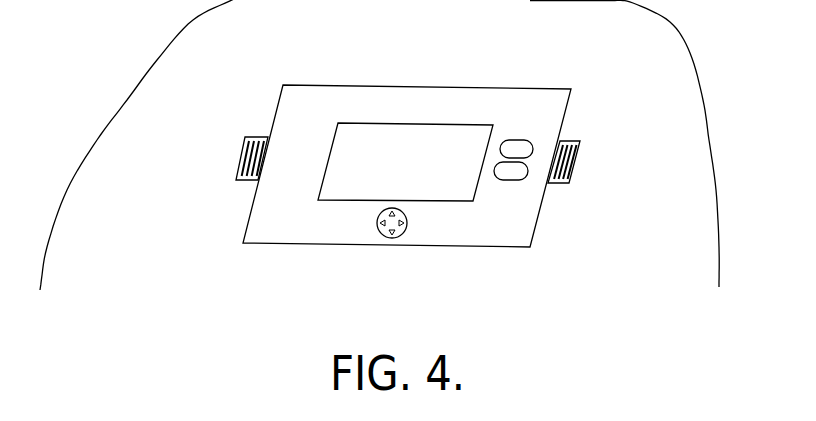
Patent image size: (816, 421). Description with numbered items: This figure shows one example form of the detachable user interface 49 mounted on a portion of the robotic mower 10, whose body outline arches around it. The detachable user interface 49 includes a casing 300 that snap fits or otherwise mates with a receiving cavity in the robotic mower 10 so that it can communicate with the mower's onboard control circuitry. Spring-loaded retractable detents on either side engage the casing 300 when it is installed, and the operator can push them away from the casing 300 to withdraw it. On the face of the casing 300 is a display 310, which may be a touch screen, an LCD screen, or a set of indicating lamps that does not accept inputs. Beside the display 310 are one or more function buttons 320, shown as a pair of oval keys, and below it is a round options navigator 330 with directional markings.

The robotic mower 10 is at (152, 65).
The detachable user interface 49 is at (557, 76).
The casing 300 is at (459, 106).
The display 310 is at (355, 135).
The function buttons 320 is at (522, 178).
The options navigator 330 is at (382, 237).